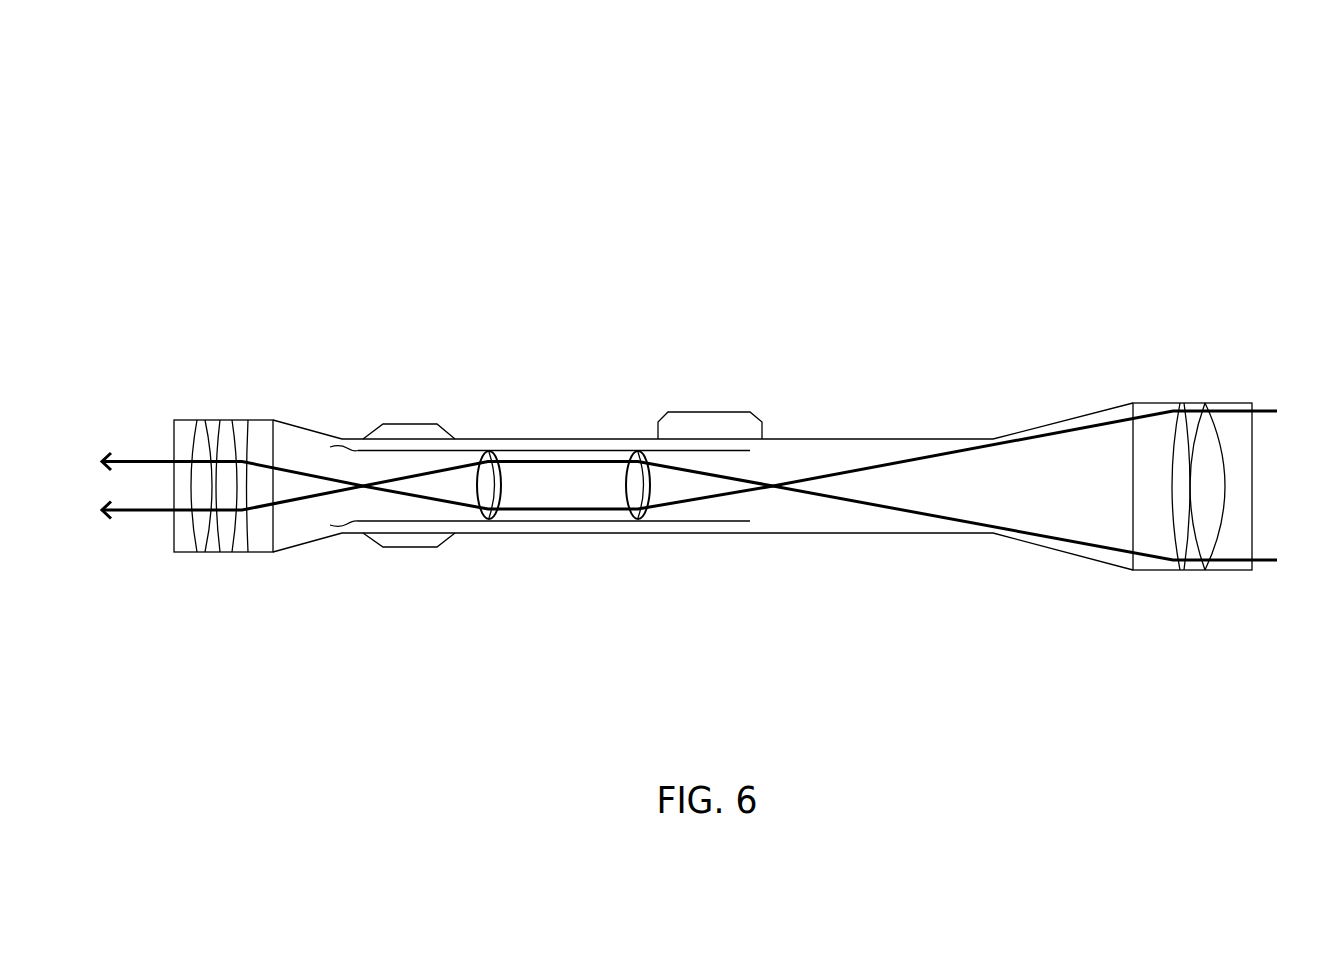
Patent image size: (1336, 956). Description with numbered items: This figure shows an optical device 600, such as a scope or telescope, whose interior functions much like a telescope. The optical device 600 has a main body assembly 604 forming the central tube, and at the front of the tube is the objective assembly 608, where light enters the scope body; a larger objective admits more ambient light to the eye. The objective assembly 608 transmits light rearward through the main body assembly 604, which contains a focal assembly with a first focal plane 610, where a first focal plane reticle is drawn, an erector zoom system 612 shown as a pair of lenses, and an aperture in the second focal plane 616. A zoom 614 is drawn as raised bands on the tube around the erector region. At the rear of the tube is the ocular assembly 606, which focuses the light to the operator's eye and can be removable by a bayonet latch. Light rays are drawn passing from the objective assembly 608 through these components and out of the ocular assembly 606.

The optical device 600 is at (1208, 92).
The main body assembly 604 is at (878, 420).
The ocular assembly 606 is at (204, 550).
The objective assembly 608 is at (1208, 447).
The first focal plane 610 is at (773, 486).
The erector zoom system 612 is at (490, 455).
The zoom 614 is at (410, 548).
The aperture in the second focal plane 616 is at (363, 486).